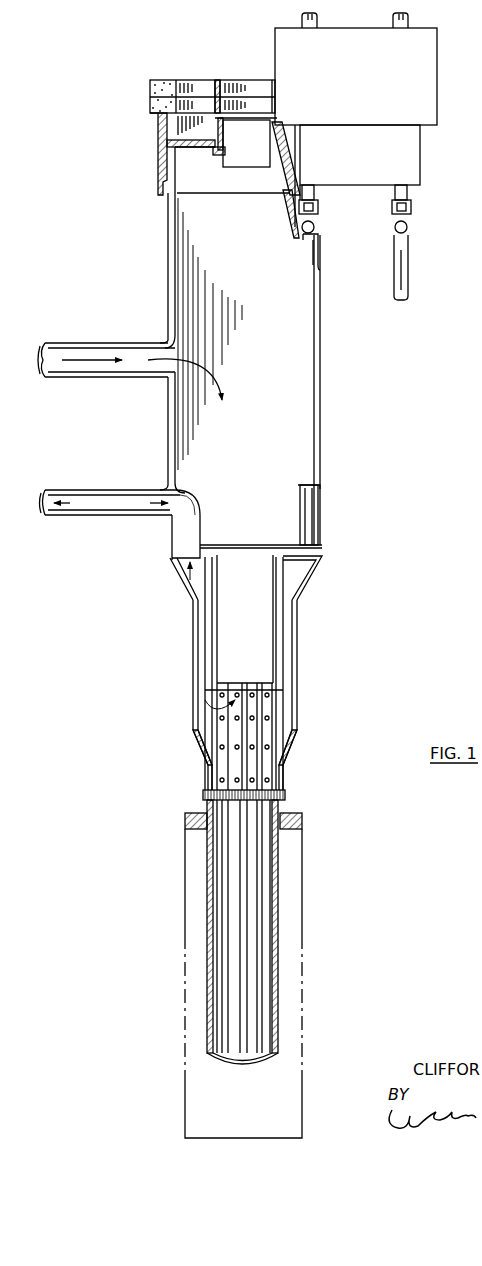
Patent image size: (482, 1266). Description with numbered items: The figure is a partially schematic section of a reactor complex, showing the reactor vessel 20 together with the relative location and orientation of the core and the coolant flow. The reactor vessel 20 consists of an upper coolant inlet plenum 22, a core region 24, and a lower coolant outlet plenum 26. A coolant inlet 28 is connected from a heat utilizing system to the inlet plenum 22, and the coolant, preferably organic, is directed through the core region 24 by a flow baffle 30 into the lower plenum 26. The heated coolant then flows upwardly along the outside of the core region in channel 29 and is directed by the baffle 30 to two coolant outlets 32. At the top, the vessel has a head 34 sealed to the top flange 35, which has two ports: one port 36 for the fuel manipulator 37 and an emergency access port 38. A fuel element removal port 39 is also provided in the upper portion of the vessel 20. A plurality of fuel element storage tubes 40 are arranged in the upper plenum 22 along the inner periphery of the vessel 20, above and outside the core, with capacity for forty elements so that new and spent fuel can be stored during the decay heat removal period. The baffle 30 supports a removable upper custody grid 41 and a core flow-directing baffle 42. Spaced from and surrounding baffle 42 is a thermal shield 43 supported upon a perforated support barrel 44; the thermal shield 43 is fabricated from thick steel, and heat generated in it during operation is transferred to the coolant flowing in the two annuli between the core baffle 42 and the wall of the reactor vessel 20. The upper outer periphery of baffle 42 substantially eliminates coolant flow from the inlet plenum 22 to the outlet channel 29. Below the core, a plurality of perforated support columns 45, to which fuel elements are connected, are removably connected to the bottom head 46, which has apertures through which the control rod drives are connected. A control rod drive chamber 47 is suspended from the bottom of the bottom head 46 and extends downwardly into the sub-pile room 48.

The reactor vessel 20 is at (322, 442).
The upper coolant inlet plenum 22 is at (209, 379).
The core region 24 is at (244, 619).
The lower coolant outlet plenum 26 is at (279, 742).
The coolant inlet 28 is at (89, 372).
The channel 29 is at (203, 657).
The flow baffle 30 is at (323, 559).
The coolant outlets 32 is at (107, 500).
The head 34 is at (291, 168).
The top flange 35 is at (292, 187).
The port 36 is at (219, 156).
The fuel manipulator 37 is at (246, 142).
The emergency access port 38 is at (200, 148).
The fuel element removal port 39 is at (308, 238).
The fuel element storage tubes 40 is at (306, 507).
The upper custody grid 41 is at (248, 545).
The core flow-directing baffle 42 is at (276, 670).
The thermal shield 43 is at (284, 645).
The perforated support barrel 44 is at (284, 720).
The perforated support columns 45 is at (222, 750).
The bottom head 46 is at (286, 795).
The control rod drive chamber 47 is at (280, 867).
The sub-pile room 48 is at (288, 976).